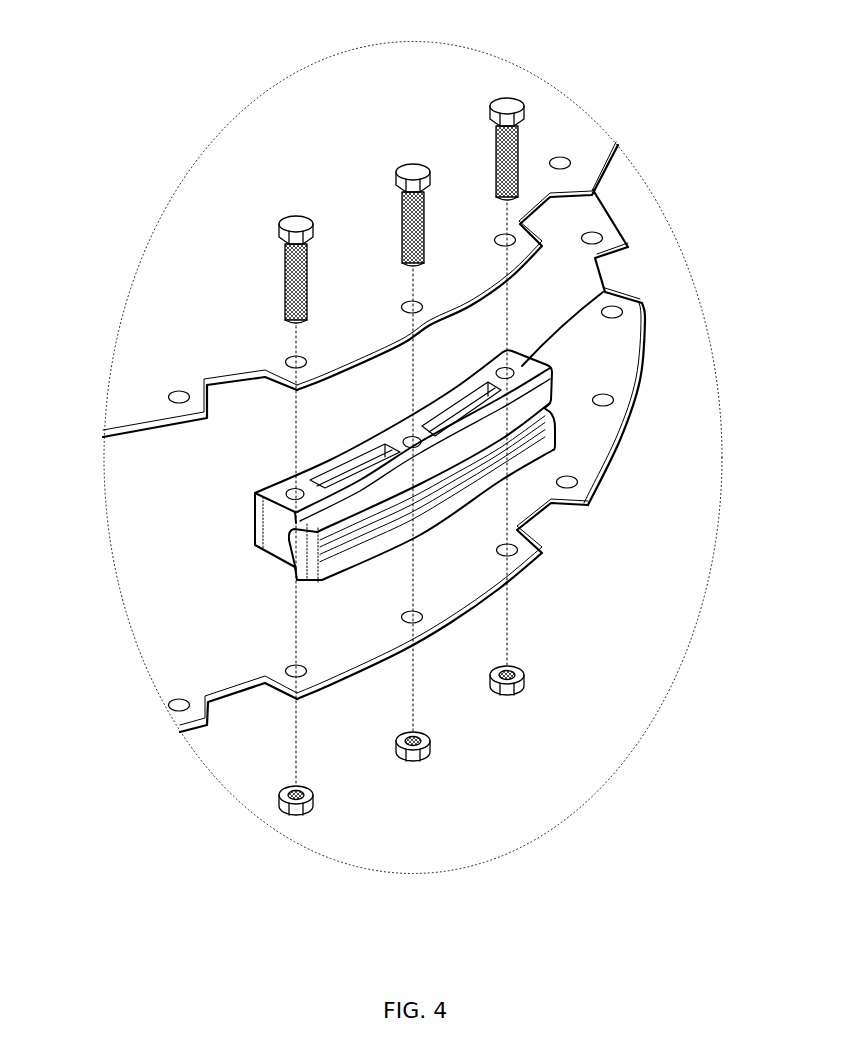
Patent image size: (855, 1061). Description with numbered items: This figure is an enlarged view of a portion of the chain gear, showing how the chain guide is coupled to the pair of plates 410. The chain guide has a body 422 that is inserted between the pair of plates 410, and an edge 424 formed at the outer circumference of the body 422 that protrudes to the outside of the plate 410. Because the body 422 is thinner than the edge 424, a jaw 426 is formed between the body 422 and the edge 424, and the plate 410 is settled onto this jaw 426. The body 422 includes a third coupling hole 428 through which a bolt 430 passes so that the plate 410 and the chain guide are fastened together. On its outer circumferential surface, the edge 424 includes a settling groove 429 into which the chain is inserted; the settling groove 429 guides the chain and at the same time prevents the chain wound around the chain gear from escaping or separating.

The plate 410 is at (578, 138).
The body 422 is at (290, 526).
The edge 424 is at (337, 563).
The jaw 426 is at (290, 502).
The third coupling hole 428 is at (600, 298).
The settling groove 429 is at (447, 482).
The bolt 430 is at (508, 107).